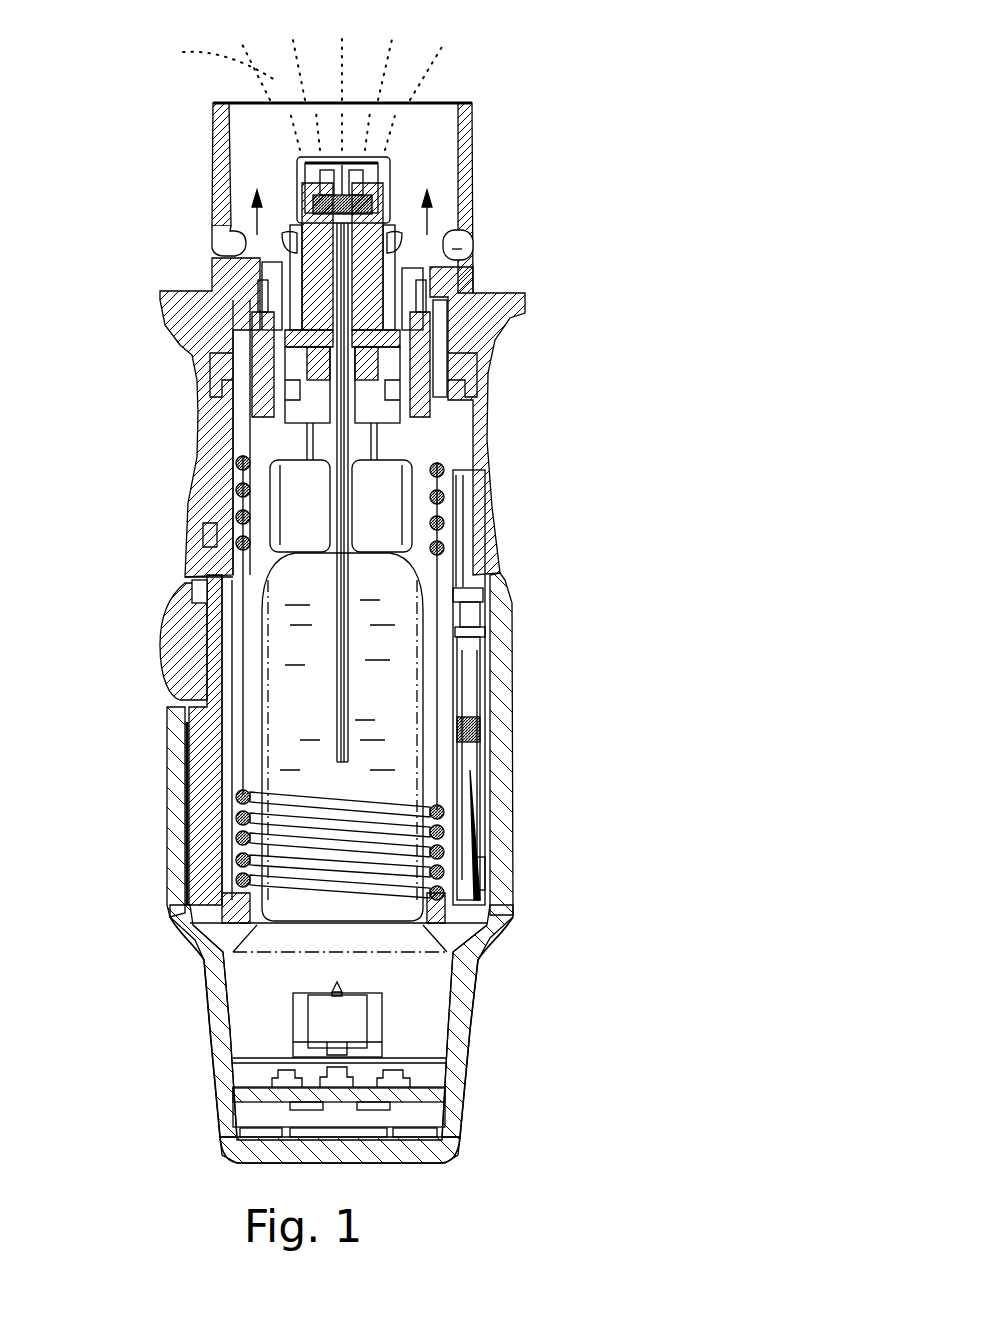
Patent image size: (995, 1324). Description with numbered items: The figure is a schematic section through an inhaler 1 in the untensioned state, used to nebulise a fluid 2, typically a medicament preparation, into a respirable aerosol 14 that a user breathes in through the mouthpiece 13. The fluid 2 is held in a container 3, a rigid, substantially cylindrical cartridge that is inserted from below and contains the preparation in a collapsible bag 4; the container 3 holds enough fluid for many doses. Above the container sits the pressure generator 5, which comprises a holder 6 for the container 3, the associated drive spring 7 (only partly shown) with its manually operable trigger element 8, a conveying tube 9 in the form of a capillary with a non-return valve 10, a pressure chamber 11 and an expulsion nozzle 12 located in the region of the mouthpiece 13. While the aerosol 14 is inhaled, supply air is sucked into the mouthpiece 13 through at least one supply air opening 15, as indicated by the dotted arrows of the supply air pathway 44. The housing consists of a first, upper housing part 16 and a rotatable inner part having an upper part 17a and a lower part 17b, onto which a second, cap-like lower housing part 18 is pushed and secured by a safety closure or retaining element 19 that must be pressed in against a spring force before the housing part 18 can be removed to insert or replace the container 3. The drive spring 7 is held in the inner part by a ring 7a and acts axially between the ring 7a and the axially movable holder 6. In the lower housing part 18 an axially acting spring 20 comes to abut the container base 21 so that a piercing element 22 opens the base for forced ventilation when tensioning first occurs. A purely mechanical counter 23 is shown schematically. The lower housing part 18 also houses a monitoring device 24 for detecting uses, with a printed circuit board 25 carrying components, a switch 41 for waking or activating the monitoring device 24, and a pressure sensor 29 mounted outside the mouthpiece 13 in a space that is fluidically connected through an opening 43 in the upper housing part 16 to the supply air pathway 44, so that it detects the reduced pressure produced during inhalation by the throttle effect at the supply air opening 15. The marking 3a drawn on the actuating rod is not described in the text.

The inhaler 1 is at (530, 108).
The fluid 2 is at (365, 718).
The container 3 is at (447, 752).
The marking on rod 3a is at (460, 706).
The collapsible bag 4 is at (445, 787).
The pressure generator 5 is at (370, 283).
The holder 6 is at (428, 445).
The drive spring 7 is at (250, 906).
The ring 7a is at (220, 950).
The trigger element 8 is at (485, 352).
The conveying tube 9 is at (345, 328).
The non-return valve 10 is at (478, 250).
The pressure chamber 11 is at (372, 217).
The expulsion nozzle 12 is at (385, 156).
The mouthpiece 13 is at (220, 172).
The aerosol 14 is at (286, 92).
The supply air opening 15 is at (226, 248).
The first housing part 16 is at (207, 416).
The upper part of inner part 17a is at (217, 533).
The lower part of inner part 17b is at (228, 630).
The second housing part 18 is at (180, 818).
The retaining element 19 is at (180, 662).
The spring 20 is at (375, 1005).
The container base 21 is at (440, 956).
The piercing element 22 is at (330, 986).
The counter 23 is at (505, 648).
The monitoring device 24 is at (467, 1067).
The printed circuit board 25 is at (428, 1100).
The pressure sensor 29 is at (275, 1080).
The switch 41 is at (340, 1085).
The opening 43 is at (232, 280).
The supply air pathway 44 is at (198, 255).